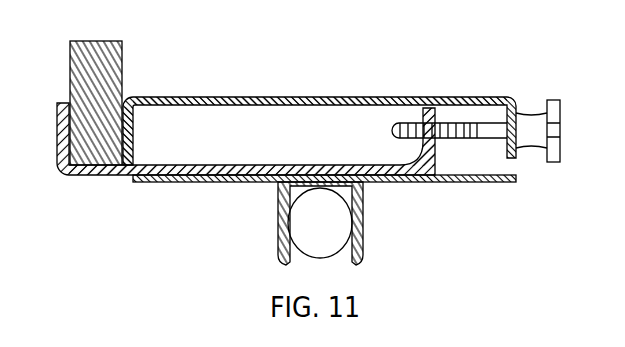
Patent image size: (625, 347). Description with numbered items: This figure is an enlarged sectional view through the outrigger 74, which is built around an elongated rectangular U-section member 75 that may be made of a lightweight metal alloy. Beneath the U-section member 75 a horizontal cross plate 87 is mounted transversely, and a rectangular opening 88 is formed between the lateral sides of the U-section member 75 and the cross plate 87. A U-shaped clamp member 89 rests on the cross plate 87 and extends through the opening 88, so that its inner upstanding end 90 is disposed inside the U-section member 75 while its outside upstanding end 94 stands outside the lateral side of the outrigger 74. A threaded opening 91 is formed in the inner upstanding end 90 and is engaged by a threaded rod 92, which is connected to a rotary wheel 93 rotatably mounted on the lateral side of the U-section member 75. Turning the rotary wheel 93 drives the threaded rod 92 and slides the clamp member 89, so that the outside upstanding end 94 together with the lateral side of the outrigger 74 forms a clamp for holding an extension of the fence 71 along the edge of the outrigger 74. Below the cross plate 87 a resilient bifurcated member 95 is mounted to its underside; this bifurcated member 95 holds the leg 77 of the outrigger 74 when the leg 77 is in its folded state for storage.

The fence 71 is at (121, 41).
The outrigger 74 is at (367, 97).
The U-section member 75 is at (248, 98).
The leg 77 is at (363, 227).
The cross plate 87 is at (468, 182).
The opening 88 is at (133, 165).
The clamp member 89 is at (95, 176).
The inner upstanding end 90 is at (435, 153).
The threaded opening 91 is at (437, 123).
The threaded rod 92 is at (468, 123).
The rotary wheel 93 is at (557, 163).
The outside upstanding end 94 is at (57, 127).
The bifurcated member 95 is at (280, 243).